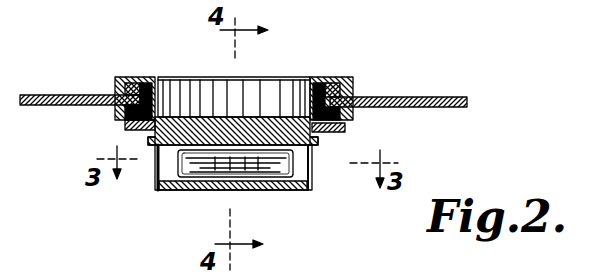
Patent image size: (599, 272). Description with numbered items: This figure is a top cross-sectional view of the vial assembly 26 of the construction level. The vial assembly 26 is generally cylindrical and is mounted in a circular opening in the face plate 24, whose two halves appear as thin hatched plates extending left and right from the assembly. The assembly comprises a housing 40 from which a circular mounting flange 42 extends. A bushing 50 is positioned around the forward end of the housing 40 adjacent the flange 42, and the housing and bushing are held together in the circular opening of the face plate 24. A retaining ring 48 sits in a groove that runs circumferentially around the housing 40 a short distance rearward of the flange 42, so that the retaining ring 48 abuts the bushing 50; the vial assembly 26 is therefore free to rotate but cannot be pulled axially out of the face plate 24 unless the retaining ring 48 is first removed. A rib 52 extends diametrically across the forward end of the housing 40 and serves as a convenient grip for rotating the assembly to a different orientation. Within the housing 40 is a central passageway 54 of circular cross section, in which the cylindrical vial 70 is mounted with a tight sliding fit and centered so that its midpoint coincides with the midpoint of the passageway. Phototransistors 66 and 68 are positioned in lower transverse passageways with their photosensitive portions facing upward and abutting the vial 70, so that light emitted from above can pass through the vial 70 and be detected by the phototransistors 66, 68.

The face plate 24 is at (37, 95).
The vial assembly 26 is at (266, 70).
The housing 40 is at (318, 162).
The circular mounting flange 42 is at (133, 77).
The retaining ring 48 is at (146, 138).
The bushing 50 is at (127, 120).
The rib 52 is at (192, 77).
The central passageway 54 is at (167, 160).
The phototransistor 66 is at (200, 178).
The phototransistor 68 is at (257, 193).
The cylindrical vial 70 is at (303, 174).